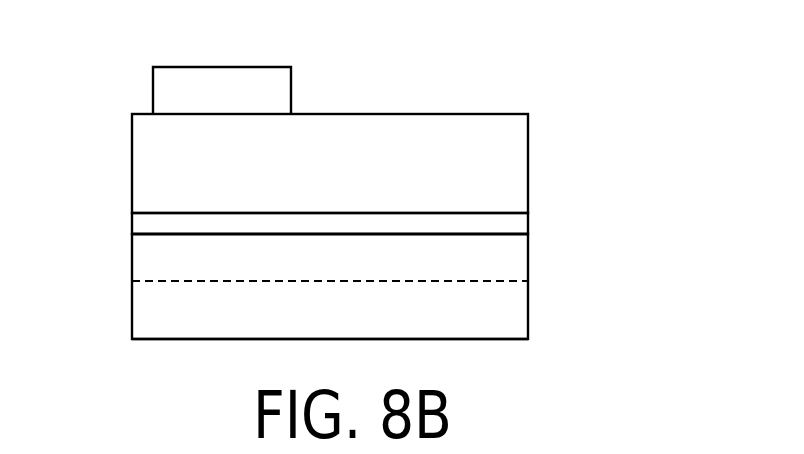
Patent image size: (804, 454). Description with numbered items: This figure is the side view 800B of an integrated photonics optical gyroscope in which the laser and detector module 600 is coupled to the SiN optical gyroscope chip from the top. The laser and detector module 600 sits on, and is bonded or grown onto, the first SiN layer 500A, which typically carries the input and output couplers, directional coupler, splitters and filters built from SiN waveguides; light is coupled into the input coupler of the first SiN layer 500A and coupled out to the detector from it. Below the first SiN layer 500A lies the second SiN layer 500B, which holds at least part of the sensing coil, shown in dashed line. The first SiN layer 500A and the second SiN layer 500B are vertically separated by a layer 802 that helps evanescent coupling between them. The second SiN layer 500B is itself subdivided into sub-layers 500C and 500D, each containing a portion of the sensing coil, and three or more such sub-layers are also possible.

The first SiN layer 500A is at (523, 168).
The layer 802 is at (523, 220).
The second SiN layer 500B is at (122, 233).
The sub-layer 500C is at (523, 258).
The sub-layer 500D is at (523, 310).
The laser and detector module 600 is at (203, 64).
The side view 800B is at (603, 78).